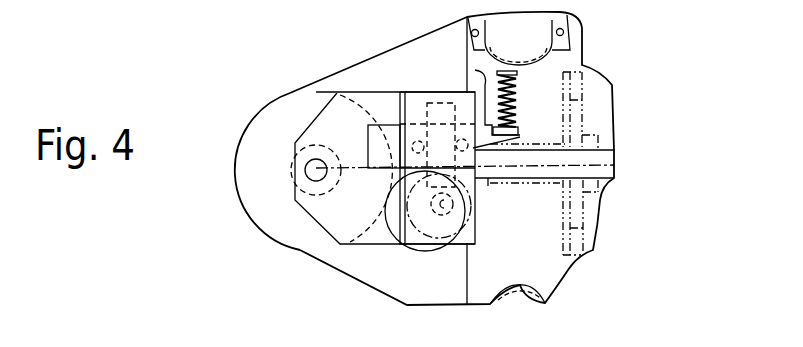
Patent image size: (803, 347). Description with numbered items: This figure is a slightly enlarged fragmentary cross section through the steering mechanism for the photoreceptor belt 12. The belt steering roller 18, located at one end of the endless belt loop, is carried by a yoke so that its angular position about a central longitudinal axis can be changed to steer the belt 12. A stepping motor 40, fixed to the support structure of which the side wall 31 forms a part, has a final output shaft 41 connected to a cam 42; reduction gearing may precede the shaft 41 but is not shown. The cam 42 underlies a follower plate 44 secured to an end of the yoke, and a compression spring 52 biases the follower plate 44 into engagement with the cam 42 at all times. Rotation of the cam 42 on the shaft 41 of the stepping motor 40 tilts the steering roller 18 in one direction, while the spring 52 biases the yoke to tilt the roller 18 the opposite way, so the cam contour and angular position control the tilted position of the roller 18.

The photoreceptor belt 12 is at (393, 48).
The belt steering roller 18 is at (285, 105).
The follower plate 44 is at (444, 148).
The compression spring 52 is at (514, 104).
The output shaft 41 is at (446, 204).
The stepping motor 40 is at (465, 213).
The cam 42 is at (402, 249).
The side wall 31 is at (510, 273).